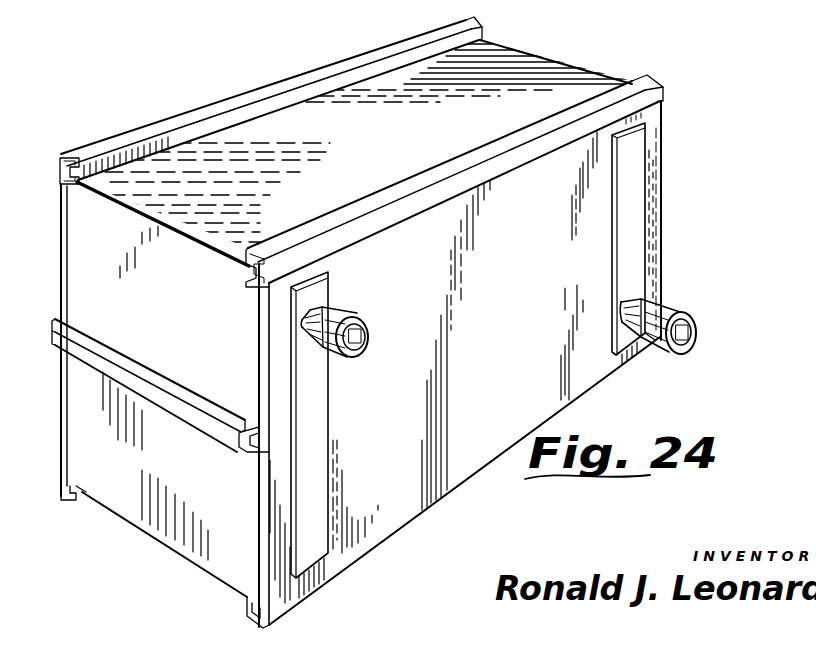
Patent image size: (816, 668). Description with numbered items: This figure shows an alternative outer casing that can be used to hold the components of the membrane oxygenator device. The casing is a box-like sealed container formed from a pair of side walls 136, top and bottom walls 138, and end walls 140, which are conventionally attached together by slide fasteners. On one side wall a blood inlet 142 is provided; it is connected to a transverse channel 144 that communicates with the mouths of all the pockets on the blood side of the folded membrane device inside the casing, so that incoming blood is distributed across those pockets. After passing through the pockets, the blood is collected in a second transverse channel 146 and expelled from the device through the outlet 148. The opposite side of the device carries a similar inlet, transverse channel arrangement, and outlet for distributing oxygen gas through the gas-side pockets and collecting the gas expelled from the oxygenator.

The side walls 136 is at (58, 236).
The top and bottom walls 138 is at (392, 142).
The end walls 140 is at (188, 324).
The blood inlet 142 is at (355, 318).
The transverse channel 144 is at (322, 502).
The transverse channel 146 is at (639, 244).
The outlet 148 is at (681, 310).